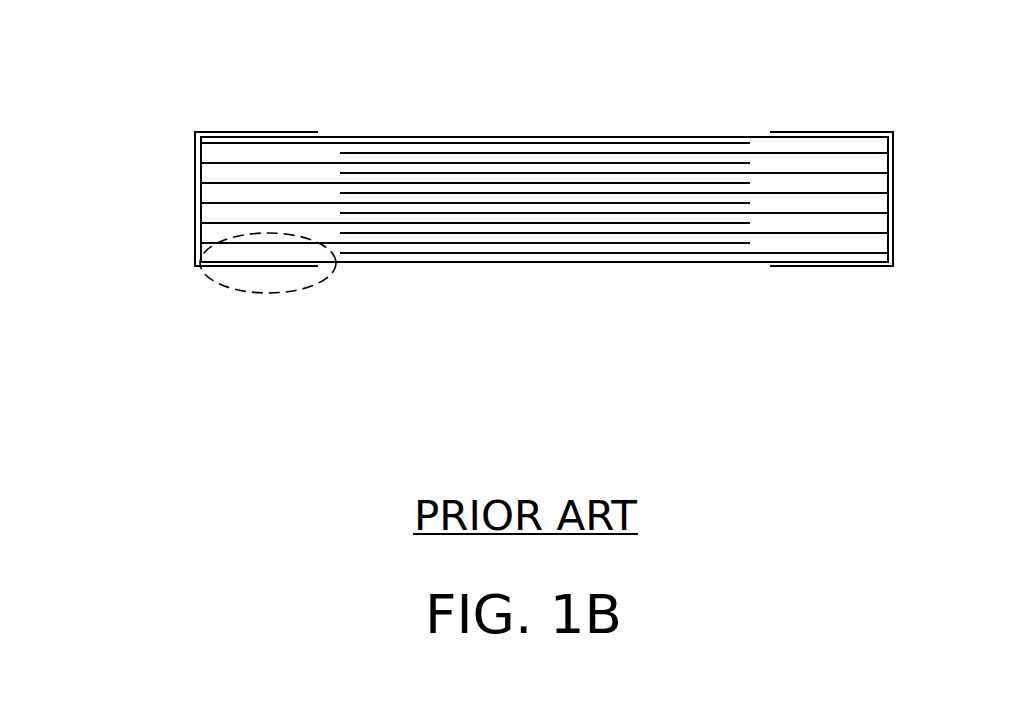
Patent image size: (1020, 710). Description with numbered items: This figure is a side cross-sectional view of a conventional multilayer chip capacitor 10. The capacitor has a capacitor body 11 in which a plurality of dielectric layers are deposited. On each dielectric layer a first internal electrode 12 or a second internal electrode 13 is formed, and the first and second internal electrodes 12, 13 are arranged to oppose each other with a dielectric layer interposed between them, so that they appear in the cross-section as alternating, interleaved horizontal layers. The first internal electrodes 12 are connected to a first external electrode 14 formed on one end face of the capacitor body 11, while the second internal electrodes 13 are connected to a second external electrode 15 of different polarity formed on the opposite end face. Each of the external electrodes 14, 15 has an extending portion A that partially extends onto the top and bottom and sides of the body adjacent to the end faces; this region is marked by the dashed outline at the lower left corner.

The multilayer chip capacitor 10 is at (516, 36).
The capacitor body 11 is at (532, 263).
The first internal electrode 12 is at (293, 163).
The second internal electrode 13 is at (697, 143).
The first external electrode 14 is at (195, 233).
The second external electrode 15 is at (850, 266).
The extending portion A is at (232, 292).